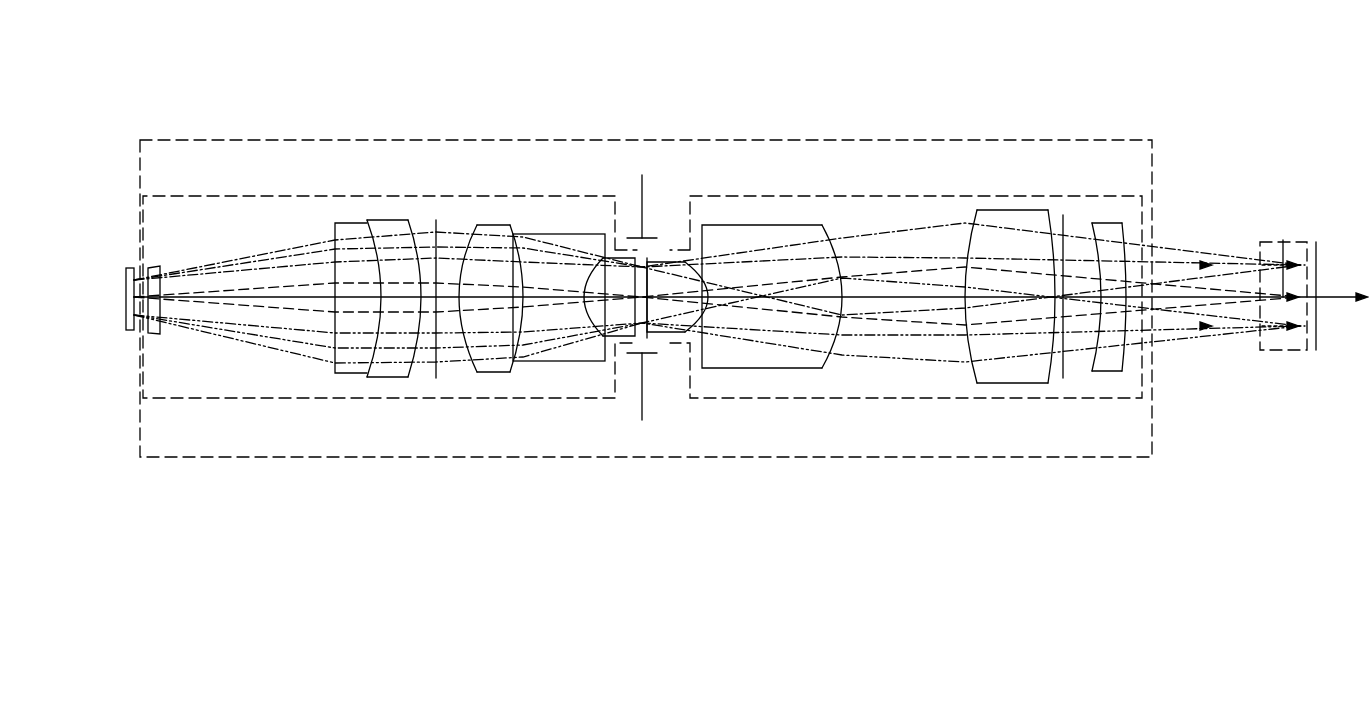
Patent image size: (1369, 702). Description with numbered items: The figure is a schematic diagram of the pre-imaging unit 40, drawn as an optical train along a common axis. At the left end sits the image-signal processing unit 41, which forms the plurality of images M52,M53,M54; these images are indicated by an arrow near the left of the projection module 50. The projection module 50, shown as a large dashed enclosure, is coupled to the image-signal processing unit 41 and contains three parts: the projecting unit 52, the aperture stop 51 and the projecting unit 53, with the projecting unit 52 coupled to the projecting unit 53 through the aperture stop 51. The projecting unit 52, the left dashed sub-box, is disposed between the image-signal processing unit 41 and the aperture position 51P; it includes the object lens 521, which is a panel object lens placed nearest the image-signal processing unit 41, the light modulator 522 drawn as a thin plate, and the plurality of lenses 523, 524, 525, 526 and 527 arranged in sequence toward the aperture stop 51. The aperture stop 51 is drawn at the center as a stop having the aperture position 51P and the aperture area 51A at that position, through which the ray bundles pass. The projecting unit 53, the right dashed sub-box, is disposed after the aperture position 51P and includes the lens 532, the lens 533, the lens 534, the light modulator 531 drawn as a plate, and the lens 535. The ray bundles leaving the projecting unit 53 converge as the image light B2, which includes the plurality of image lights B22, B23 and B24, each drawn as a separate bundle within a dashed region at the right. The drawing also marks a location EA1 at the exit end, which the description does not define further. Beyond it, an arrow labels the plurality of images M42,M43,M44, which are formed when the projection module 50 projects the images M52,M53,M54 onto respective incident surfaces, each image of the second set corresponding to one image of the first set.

The pre-imaging unit 40 is at (905, 78).
The image-signal processing unit 41 is at (128, 268).
The projection module 50 is at (318, 140).
The aperture stop 51 is at (639, 206).
The aperture position 51P is at (657, 217).
The aperture area 51A is at (657, 378).
The projecting unit 52 is at (216, 196).
The projecting unit 53 is at (815, 196).
The object lens 521 is at (158, 267).
The light modulator 522 is at (436, 221).
The lens 523 is at (330, 370).
The lens 524 is at (387, 372).
The lens 525 is at (498, 374).
The lens 526 is at (557, 361).
The lens 527 is at (597, 262).
The light modulator 531 is at (1065, 216).
The lens 532 is at (667, 313).
The lens 533 is at (752, 233).
The lens 534 is at (1007, 384).
The lens 535 is at (1107, 372).
The image light B2 is at (1300, 242).
The image light B22 is at (1272, 260).
The image light B23 is at (1283, 240).
The image light B24 is at (1275, 332).
The exit aperture EA1 is at (1341, 296).
The images M52,M53,M54 is at (135, 470).
The images M42,M43,M44 is at (1316, 374).